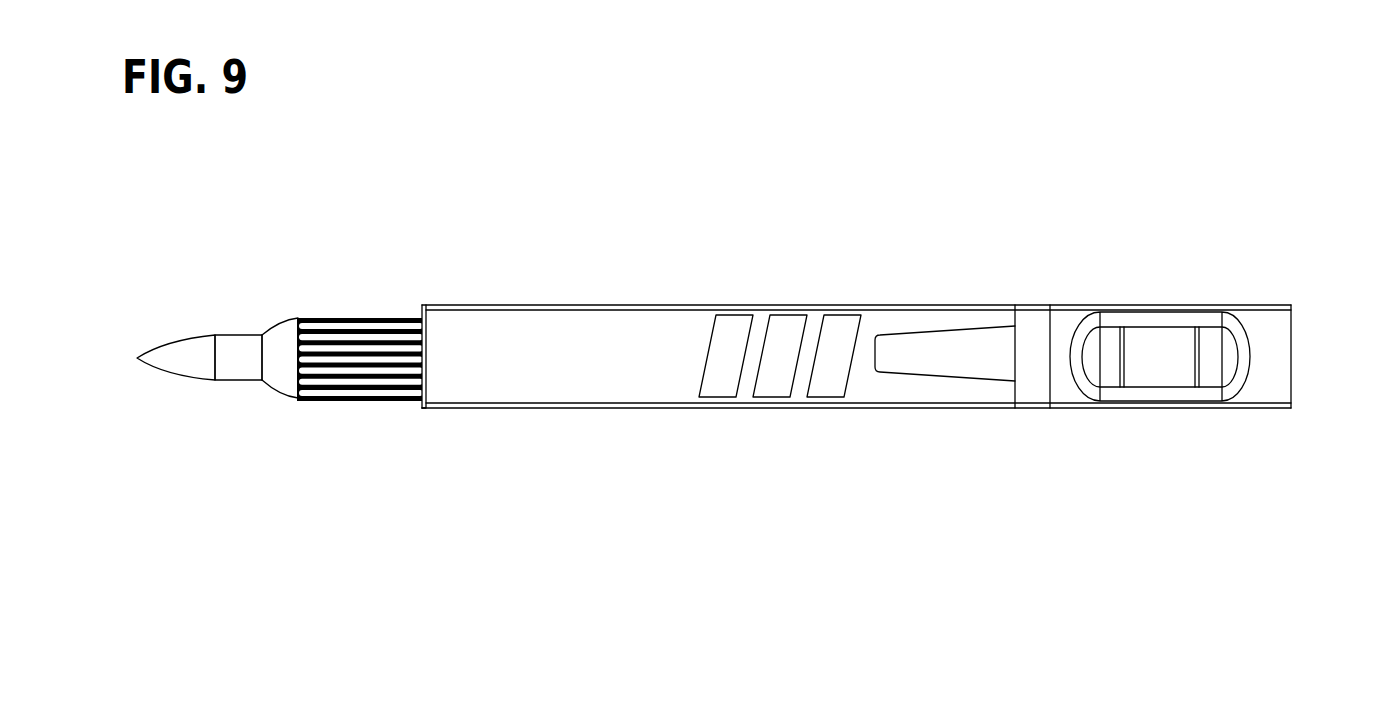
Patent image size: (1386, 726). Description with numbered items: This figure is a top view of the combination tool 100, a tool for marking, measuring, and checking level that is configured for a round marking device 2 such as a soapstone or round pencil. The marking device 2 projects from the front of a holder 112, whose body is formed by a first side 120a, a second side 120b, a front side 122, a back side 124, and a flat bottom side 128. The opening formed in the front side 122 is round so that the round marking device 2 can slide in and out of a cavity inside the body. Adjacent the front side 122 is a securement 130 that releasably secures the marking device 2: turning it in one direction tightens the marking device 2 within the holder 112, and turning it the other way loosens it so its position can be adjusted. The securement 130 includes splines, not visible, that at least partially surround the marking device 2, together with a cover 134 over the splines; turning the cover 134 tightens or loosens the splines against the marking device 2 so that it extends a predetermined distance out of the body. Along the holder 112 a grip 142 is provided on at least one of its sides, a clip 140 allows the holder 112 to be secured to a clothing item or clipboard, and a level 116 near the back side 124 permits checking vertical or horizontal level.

The combination tool 100 is at (470, 222).
The marking device 2 is at (152, 350).
The securement 130 is at (272, 328).
The cover 134 is at (377, 318).
The holder 112 is at (477, 310).
The front side 122 is at (423, 404).
The flat bottom side 128 is at (505, 410).
The second side 120b is at (594, 311).
The first side 120a is at (767, 405).
The grip 142 is at (753, 316).
The clip 140 is at (935, 335).
The back side 124 is at (1291, 378).
The level 116 is at (1142, 330).